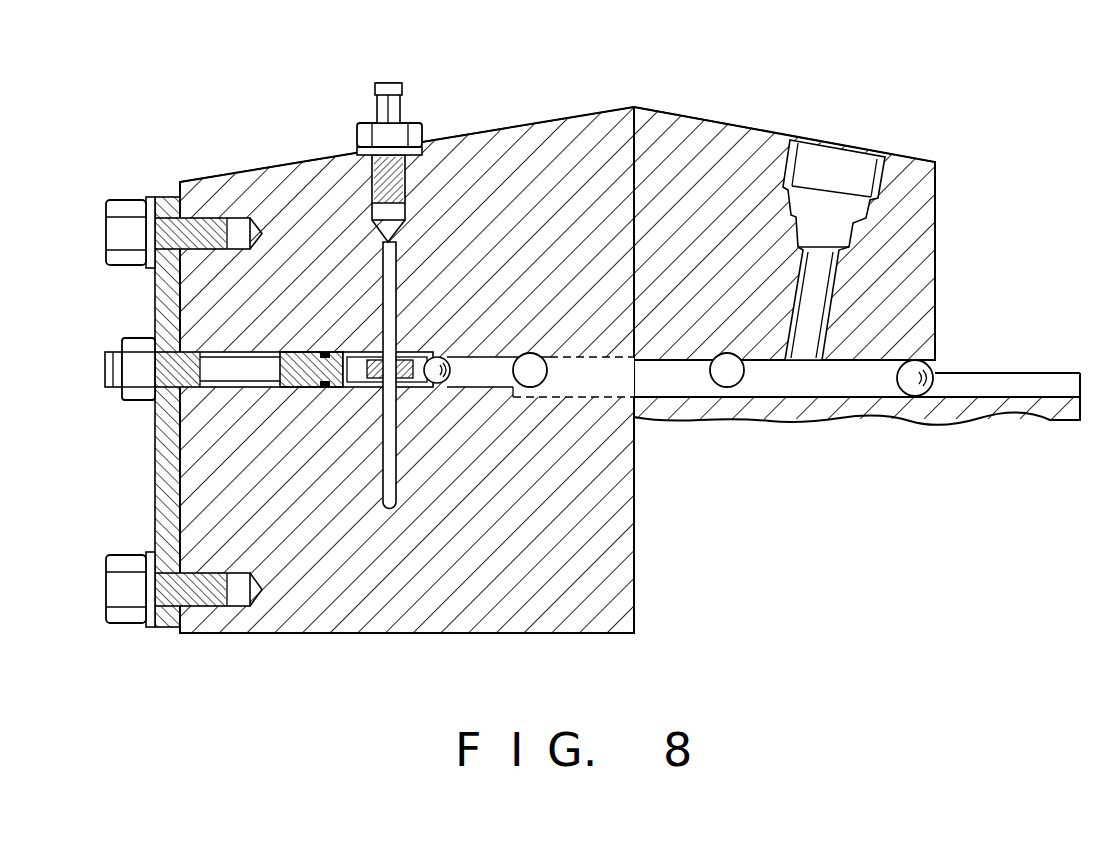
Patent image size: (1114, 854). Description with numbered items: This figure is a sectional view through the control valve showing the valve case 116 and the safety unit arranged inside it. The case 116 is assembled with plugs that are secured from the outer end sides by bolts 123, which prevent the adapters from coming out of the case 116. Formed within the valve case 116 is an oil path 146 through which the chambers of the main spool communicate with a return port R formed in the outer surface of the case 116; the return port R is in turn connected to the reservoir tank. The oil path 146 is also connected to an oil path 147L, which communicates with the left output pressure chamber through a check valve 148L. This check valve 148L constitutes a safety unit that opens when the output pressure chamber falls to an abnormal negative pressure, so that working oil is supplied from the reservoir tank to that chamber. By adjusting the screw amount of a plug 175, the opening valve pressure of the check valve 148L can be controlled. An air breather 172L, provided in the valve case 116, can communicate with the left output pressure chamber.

The valve case 116 is at (935, 188).
The bolts 123 is at (123, 203).
The oil path 146 is at (867, 357).
The oil path 147L is at (385, 438).
The check valve 148L is at (420, 350).
The air breather 172L is at (382, 100).
The plug 175 is at (212, 362).
The return port R is at (830, 162).